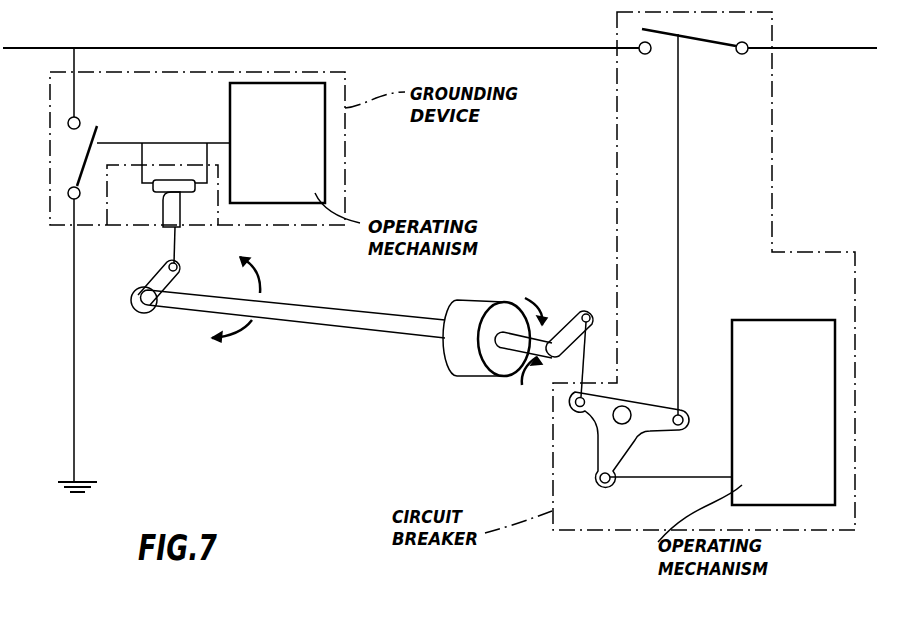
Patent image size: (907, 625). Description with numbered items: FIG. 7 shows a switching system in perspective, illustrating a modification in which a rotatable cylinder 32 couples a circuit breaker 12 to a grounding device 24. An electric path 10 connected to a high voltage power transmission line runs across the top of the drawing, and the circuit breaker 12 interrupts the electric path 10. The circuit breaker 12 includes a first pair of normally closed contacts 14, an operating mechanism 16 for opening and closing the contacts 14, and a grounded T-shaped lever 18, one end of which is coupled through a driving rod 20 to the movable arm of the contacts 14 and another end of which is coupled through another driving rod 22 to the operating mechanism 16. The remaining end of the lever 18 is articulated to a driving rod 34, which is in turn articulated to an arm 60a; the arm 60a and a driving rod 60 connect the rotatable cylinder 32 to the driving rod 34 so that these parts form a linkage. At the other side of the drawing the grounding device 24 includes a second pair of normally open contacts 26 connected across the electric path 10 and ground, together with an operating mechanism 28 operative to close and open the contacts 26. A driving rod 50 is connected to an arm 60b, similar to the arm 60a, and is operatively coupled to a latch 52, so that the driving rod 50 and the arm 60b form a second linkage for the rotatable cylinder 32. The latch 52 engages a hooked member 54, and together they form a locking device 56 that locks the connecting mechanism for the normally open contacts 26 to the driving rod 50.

The electric path 10 is at (523, 47).
The circuit breaker 12 is at (811, 128).
The first pair of normally closed contacts 14 is at (710, 46).
The operating mechanism 16 is at (770, 325).
The T-shaped lever 18 is at (612, 432).
The driving rod 20 is at (679, 204).
The driving rod 22 is at (662, 478).
The grounding device 24 is at (336, 196).
The second pair of normally open contacts 26 is at (97, 128).
The operating mechanism 28 is at (238, 105).
The rotatable cylinder 32 is at (463, 360).
The driving rod 34 is at (588, 358).
The driving rod 50 is at (325, 320).
The latch 52 is at (186, 196).
The hooked member 54 is at (176, 240).
The locking device 56 is at (138, 211).
The driving rod 60 is at (538, 358).
The arm 60a is at (567, 333).
The arm 60b is at (155, 277).